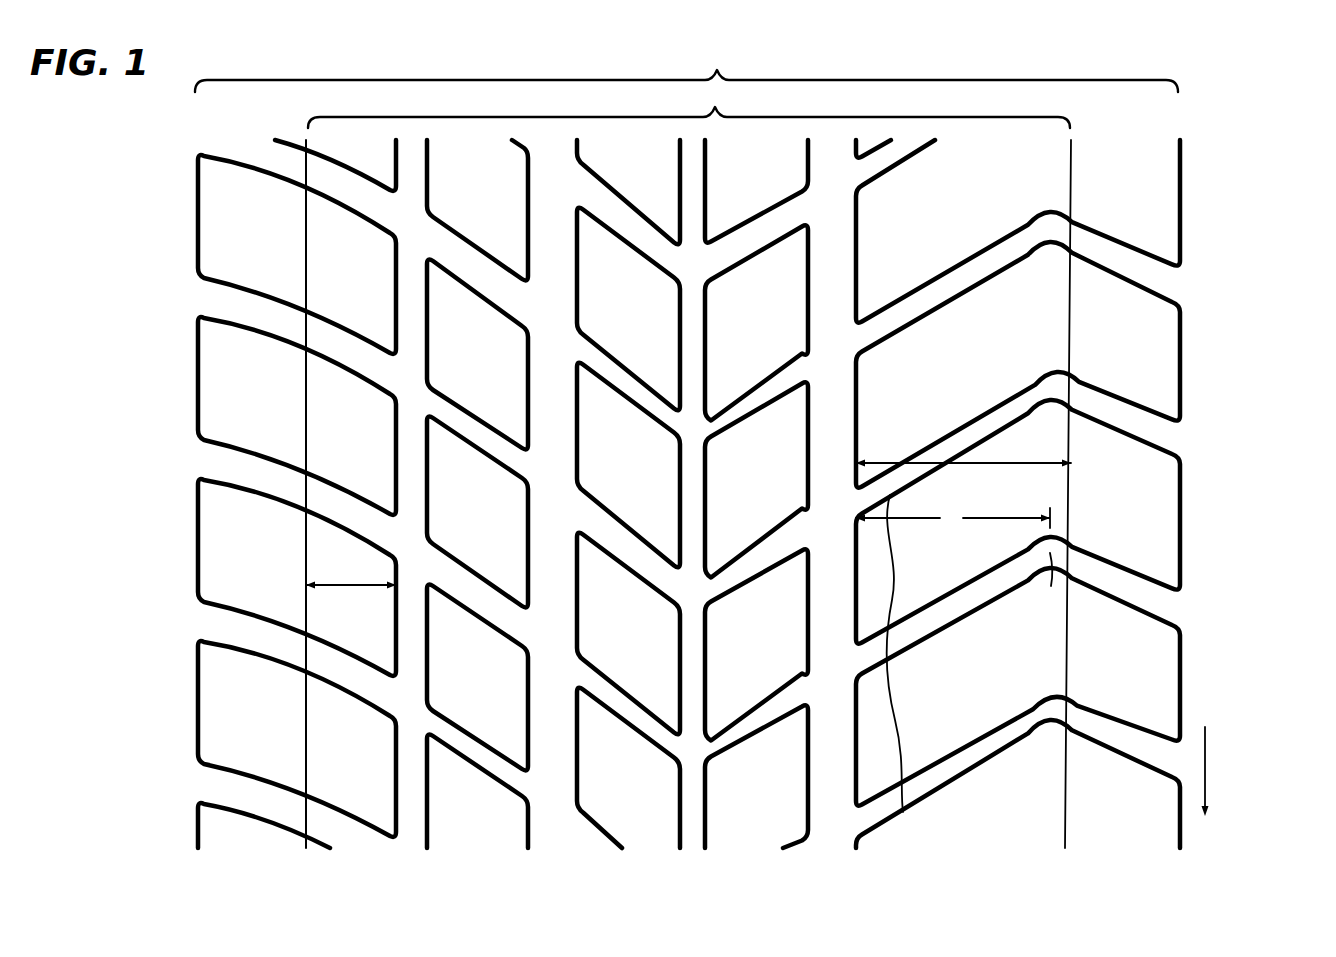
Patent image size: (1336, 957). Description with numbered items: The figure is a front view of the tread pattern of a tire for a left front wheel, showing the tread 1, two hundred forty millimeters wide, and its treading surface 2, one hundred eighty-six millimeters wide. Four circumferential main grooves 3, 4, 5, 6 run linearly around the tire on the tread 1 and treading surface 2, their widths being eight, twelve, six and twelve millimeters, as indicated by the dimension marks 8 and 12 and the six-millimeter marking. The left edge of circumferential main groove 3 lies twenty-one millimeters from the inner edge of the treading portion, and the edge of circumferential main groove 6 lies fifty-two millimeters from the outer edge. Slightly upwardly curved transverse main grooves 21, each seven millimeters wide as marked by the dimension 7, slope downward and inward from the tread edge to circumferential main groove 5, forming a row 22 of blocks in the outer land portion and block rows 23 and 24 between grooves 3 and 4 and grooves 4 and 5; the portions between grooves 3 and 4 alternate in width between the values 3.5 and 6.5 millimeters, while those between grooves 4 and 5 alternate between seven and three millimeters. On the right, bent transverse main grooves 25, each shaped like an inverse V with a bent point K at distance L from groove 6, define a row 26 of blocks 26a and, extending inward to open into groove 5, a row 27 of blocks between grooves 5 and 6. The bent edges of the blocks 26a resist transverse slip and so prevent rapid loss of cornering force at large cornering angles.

The tread 1 is at (757, 471).
The treading surface 2 is at (744, 491).
The circumferential main groove 3 is at (428, 815).
The circumferential main groove 4 is at (555, 840).
The circumferential main groove 5 is at (693, 845).
The circumferential main groove 6 is at (828, 835).
The transverse main groove width 7 is at (339, 684).
The circumferential main groove width 8 is at (396, 787).
The circumferential main groove width 12 is at (530, 753).
The transverse main groove 21 is at (323, 527).
The row of blocks 22 is at (297, 518).
The block row 23 is at (478, 853).
The block row 24 is at (642, 853).
The bent transverse main groove 25 is at (912, 650).
The row of blocks 26 is at (943, 852).
The block 26a is at (968, 580).
The row of blocks 27 is at (750, 852).
The transverse groove portion width 3.5 is at (492, 762).
The transverse groove portion width 6.5 is at (478, 588).